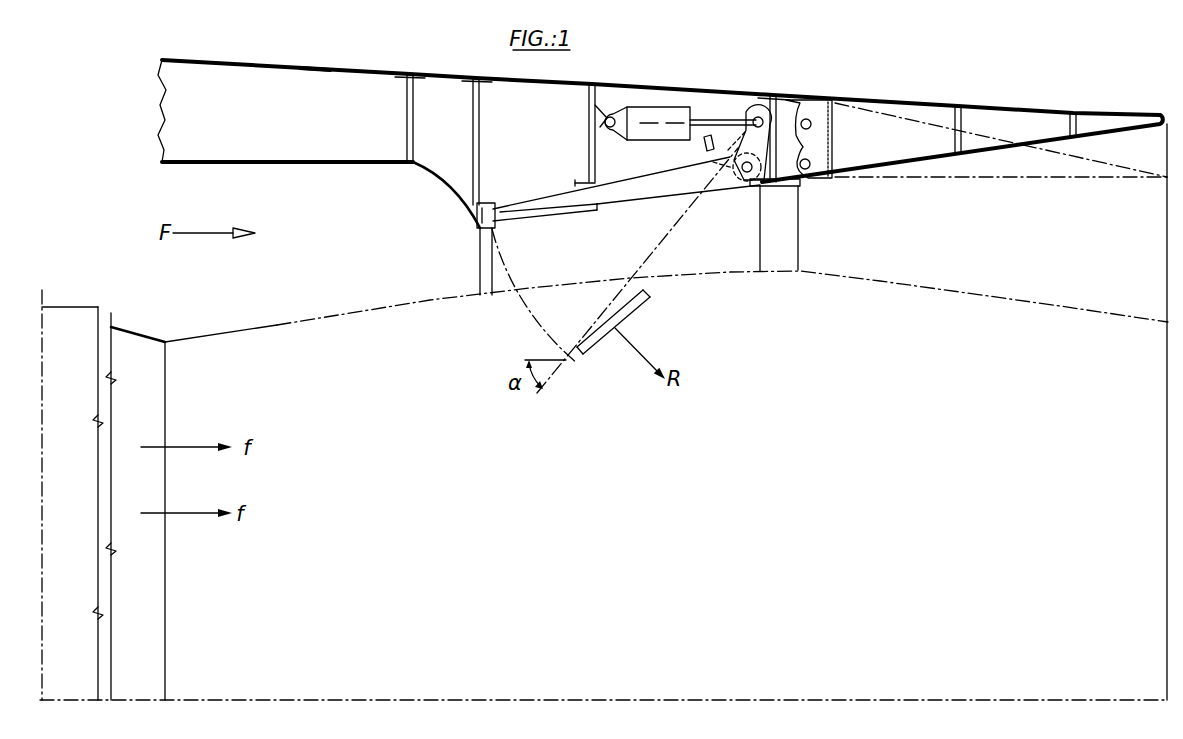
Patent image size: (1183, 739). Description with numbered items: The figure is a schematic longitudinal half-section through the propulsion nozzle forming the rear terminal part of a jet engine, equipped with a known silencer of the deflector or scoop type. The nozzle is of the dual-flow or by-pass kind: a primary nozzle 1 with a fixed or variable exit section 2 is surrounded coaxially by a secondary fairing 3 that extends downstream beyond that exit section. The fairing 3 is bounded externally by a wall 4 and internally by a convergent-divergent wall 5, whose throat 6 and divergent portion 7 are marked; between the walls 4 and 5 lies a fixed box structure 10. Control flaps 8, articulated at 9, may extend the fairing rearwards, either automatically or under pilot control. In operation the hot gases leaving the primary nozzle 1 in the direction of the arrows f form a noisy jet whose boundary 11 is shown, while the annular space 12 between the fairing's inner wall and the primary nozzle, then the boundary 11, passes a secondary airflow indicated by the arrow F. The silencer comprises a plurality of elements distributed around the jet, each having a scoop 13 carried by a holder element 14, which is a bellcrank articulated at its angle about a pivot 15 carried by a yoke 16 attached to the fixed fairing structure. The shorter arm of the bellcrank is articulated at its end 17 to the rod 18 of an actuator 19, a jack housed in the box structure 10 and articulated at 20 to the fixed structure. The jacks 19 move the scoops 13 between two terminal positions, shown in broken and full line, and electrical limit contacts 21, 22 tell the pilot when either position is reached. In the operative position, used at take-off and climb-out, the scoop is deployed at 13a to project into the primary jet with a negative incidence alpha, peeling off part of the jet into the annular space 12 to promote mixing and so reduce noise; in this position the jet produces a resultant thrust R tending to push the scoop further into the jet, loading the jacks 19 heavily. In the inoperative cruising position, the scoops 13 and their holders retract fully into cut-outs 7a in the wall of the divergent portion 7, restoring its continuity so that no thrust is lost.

The primary nozzle 1 is at (145, 326).
The exit section 2 is at (165, 600).
The secondary fairing 3 is at (312, 58).
The external wall 4 is at (348, 70).
The convergent-divergent wall 5 is at (330, 167).
The throat 6 is at (478, 230).
The divergent portion 7 is at (792, 188).
The cut-outs 7a is at (482, 236).
The control flaps 8 is at (996, 115).
The articulation of control flaps 9 is at (812, 162).
The fixed box structure 10 is at (640, 163).
The boundary of the primary jet 11 is at (256, 324).
The annular space 12 is at (339, 243).
The deflector element or scoop 13 is at (553, 220).
The deployed silencer element 13a is at (645, 292).
The holder element 14 is at (645, 196).
The pivot 15 is at (738, 182).
The yoke 16 is at (763, 190).
The end of shorter bellcrank arm 17 is at (770, 96).
The rod 18 is at (705, 119).
The actuator 19 is at (673, 106).
The actuator articulation 20 is at (612, 130).
The electrical limit contact 21 is at (498, 208).
The electrical limit contact 22 is at (704, 142).